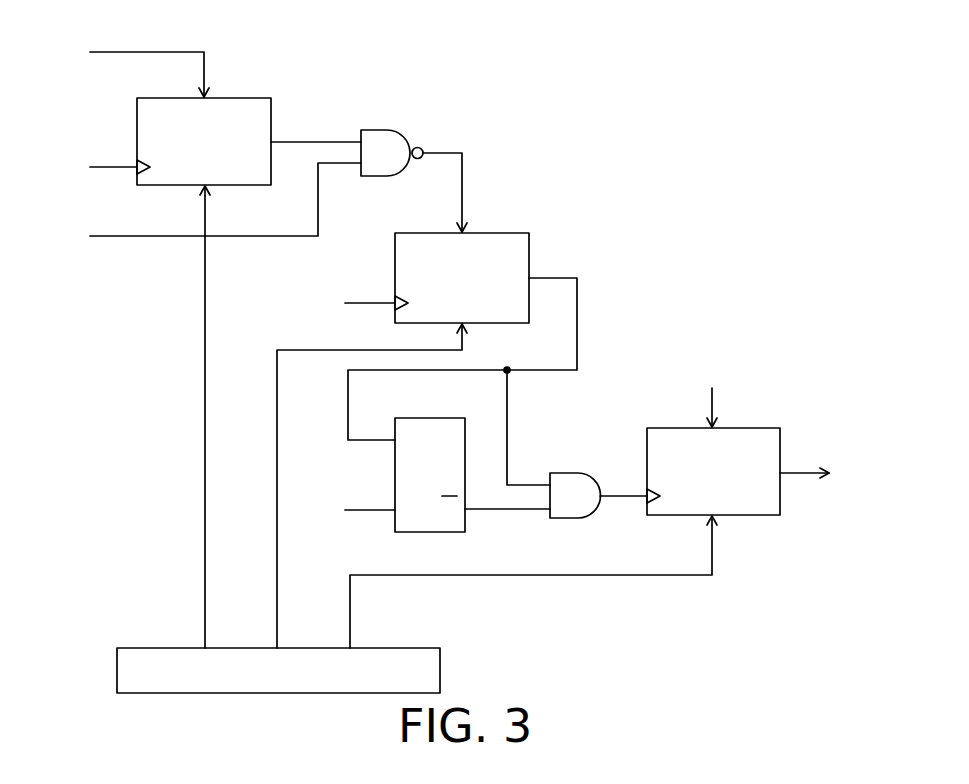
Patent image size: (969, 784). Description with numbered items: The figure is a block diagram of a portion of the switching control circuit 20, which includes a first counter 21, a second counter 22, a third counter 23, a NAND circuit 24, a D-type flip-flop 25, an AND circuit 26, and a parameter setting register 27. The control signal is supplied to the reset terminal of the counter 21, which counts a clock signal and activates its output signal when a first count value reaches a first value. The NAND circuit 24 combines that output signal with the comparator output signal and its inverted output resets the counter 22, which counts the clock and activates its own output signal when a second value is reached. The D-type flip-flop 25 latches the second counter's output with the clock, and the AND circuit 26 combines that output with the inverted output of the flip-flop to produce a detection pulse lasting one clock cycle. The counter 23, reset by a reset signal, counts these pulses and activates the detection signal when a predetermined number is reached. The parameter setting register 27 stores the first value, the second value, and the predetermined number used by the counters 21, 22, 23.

The switching control circuit 20 is at (456, 25).
The counter 21 is at (240, 98).
The counter 22 is at (497, 233).
The counter 23 is at (746, 428).
The NAND circuit 24 is at (388, 130).
The D-type flip-flop 25 is at (432, 418).
The AND circuit 26 is at (576, 473).
The parameter setting register 27 is at (400, 648).